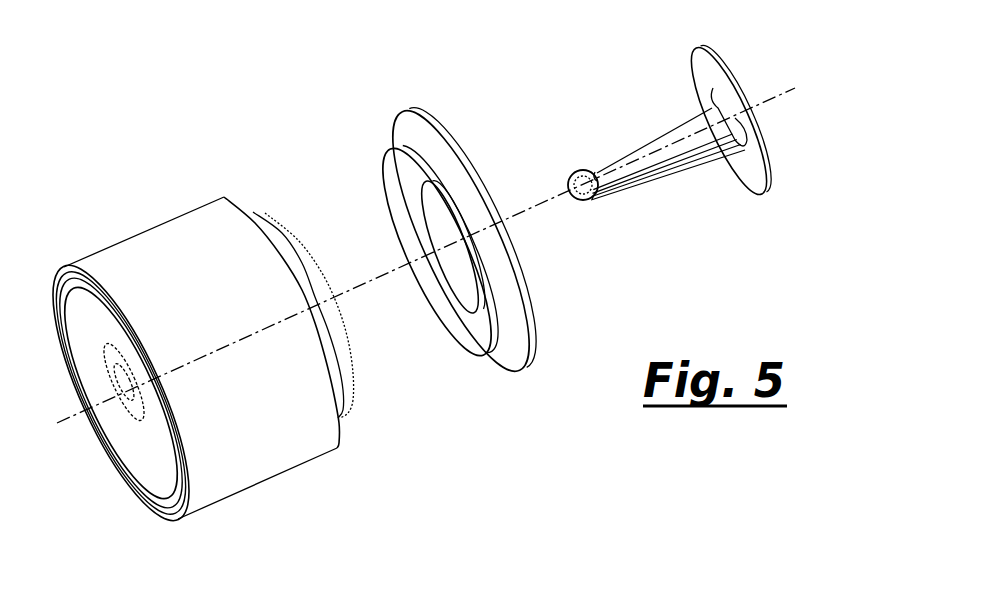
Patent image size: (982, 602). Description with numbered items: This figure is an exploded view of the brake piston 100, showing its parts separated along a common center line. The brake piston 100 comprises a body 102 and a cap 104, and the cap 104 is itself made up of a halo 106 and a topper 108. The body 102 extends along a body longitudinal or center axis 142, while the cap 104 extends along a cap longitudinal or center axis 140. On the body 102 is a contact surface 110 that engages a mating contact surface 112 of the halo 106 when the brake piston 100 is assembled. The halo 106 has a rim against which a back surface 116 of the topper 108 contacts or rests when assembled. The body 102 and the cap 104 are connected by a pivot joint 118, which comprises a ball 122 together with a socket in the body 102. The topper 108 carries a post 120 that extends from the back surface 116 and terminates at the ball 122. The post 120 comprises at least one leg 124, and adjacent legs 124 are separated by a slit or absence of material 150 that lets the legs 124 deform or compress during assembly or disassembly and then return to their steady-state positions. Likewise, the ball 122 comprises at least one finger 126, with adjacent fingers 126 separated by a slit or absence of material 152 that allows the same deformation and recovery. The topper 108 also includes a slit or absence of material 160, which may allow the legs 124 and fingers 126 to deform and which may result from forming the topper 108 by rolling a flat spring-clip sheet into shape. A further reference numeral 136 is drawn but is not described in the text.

The brake piston 100 is at (170, 148).
The body 102 is at (270, 488).
The cap 104 is at (671, 176).
The halo 106 is at (413, 114).
The topper 108 is at (737, 82).
The contact surface 110 is at (310, 268).
The mating contact surface 112 is at (465, 318).
The back surface 116 is at (707, 78).
The pivot joint 118 is at (537, 83).
The post 120 is at (662, 130).
The ball 122 is at (565, 170).
The leg 124 is at (693, 147).
The finger 126 is at (571, 175).
The bore 136 is at (447, 218).
The cap longitudinal or center axis 140 is at (379, 278).
The body longitudinal or center axis 142 is at (352, 288).
The slit or absence of material 150 is at (712, 140).
The slit or absence of material 152 is at (577, 183).
The slit or absence of material 160 is at (767, 163).